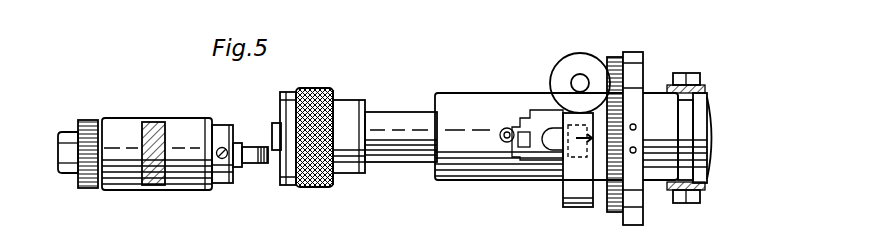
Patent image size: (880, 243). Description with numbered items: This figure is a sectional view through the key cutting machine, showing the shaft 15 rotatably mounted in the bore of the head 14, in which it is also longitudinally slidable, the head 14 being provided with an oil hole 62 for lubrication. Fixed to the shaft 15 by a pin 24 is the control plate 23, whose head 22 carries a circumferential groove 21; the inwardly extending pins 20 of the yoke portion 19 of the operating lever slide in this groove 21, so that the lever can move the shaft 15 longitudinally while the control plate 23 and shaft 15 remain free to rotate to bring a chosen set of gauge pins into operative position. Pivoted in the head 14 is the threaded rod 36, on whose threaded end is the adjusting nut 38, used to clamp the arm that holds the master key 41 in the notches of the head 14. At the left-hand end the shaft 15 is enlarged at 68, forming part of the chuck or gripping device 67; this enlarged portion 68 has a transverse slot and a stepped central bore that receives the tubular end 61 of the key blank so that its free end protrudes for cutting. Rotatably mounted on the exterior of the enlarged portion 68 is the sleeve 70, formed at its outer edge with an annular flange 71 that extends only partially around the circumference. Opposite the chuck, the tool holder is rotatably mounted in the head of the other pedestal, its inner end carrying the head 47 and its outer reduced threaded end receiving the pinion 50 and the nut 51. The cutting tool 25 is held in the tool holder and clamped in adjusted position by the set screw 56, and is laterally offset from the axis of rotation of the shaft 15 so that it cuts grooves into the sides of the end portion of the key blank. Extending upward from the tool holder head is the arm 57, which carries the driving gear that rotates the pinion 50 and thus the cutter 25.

The head 14 is at (446, 93).
The shaft 15 is at (398, 150).
The yoke portion 19 is at (706, 88).
The pins 20 is at (691, 73).
The circumferential groove 21 is at (690, 119).
The head of the control plate 22 is at (658, 98).
The control plate 23 is at (641, 52).
The pin 24 is at (698, 160).
The cutting tool 25 is at (255, 165).
The threaded rod 36 is at (584, 78).
The adjusting nut 38 is at (570, 62).
The master key 41 is at (554, 151).
The head 47 is at (223, 186).
The pinion 50 is at (88, 120).
The nut 51 is at (62, 145).
The set screw 56 is at (222, 147).
The arm 57 is at (154, 122).
The tubular end 61 is at (272, 133).
The oil hole 62 is at (505, 128).
The chuck 67 is at (315, 188).
The enlarged portion 68 is at (357, 103).
The sleeve 70 is at (314, 92).
The annular flange 71 is at (283, 94).